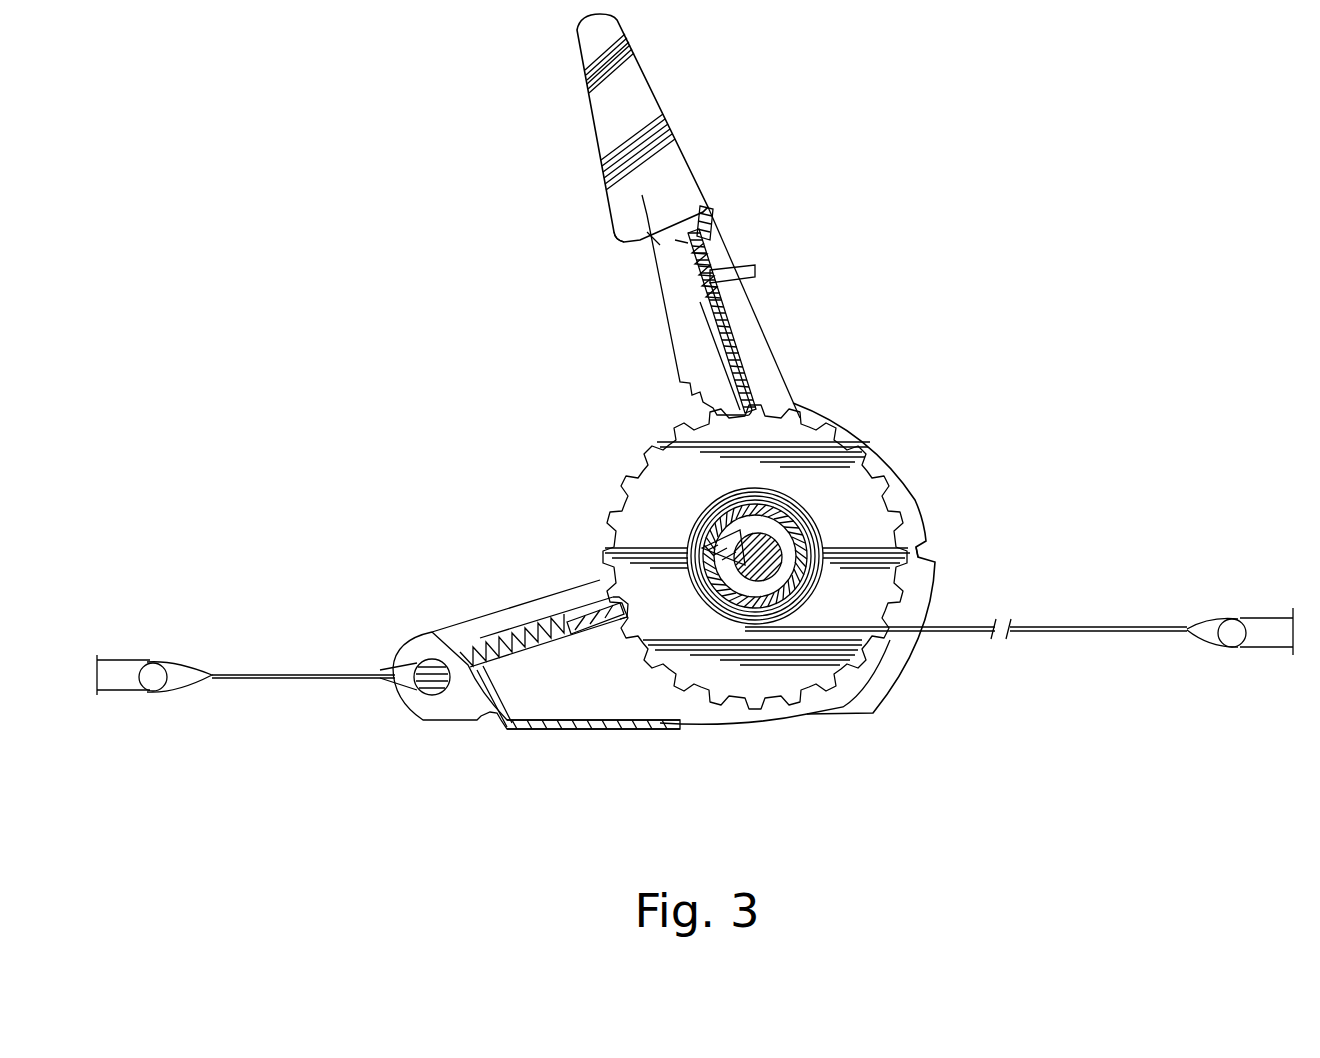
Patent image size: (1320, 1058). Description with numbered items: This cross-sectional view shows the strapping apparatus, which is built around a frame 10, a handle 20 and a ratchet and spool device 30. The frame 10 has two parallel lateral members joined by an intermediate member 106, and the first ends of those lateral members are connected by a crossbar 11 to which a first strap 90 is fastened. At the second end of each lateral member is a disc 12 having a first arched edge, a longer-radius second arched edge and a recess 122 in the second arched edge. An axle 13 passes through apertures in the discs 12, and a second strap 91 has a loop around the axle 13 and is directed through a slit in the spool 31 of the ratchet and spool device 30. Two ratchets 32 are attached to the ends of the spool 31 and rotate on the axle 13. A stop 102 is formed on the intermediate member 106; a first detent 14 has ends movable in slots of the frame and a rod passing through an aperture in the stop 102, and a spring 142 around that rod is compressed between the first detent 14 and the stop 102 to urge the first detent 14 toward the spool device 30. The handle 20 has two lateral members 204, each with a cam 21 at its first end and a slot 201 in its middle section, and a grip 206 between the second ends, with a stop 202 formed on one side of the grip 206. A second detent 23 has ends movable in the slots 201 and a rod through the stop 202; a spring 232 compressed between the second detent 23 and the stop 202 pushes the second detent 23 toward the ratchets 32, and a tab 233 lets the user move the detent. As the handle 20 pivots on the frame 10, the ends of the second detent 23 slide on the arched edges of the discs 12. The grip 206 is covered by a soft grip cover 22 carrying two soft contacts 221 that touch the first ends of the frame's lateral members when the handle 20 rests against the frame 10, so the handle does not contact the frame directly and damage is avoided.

The frame 10 is at (526, 680).
The crossbar 11 is at (430, 683).
The disc 12 is at (854, 600).
The axle 13 is at (759, 565).
The first detent 14 is at (563, 623).
The handle 20 is at (656, 216).
The cam 21 is at (830, 705).
The grip cover 22 is at (650, 125).
The second detent 23 is at (735, 355).
The ratchet and spool device 30 is at (694, 601).
The spool 31 is at (700, 600).
The ratchet 32 is at (660, 485).
The first strap 90 is at (228, 673).
The second strap 91 is at (1082, 634).
The stop 102 is at (465, 650).
The intermediate member 106 is at (556, 727).
The recess 122 is at (937, 553).
The spring 142 is at (508, 637).
The slot 201 is at (725, 318).
The stop 202 is at (685, 242).
The lateral member 204 is at (660, 245).
The grip 206 is at (713, 212).
The soft contact 221 is at (614, 234).
The spring 232 is at (713, 240).
The tab 233 is at (755, 268).